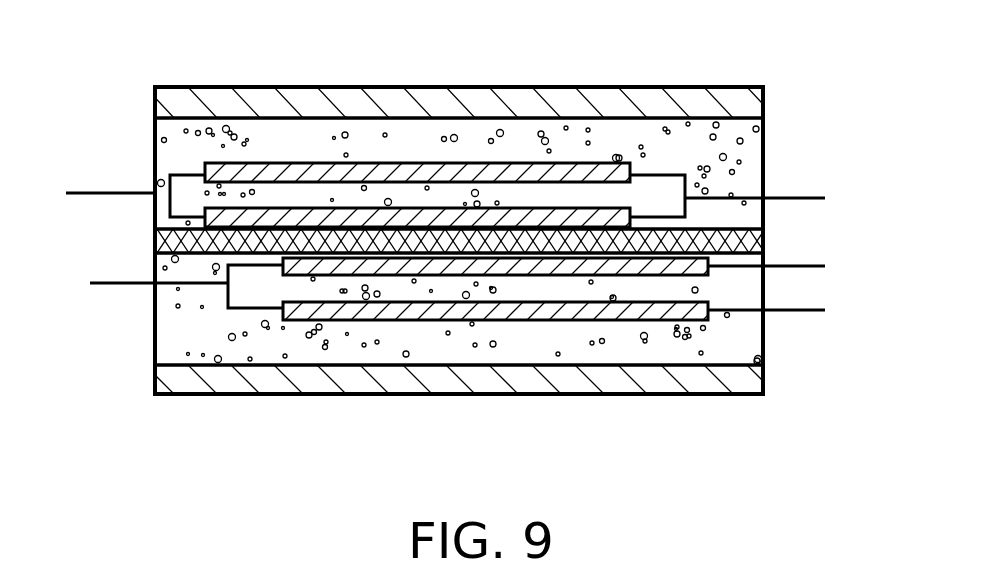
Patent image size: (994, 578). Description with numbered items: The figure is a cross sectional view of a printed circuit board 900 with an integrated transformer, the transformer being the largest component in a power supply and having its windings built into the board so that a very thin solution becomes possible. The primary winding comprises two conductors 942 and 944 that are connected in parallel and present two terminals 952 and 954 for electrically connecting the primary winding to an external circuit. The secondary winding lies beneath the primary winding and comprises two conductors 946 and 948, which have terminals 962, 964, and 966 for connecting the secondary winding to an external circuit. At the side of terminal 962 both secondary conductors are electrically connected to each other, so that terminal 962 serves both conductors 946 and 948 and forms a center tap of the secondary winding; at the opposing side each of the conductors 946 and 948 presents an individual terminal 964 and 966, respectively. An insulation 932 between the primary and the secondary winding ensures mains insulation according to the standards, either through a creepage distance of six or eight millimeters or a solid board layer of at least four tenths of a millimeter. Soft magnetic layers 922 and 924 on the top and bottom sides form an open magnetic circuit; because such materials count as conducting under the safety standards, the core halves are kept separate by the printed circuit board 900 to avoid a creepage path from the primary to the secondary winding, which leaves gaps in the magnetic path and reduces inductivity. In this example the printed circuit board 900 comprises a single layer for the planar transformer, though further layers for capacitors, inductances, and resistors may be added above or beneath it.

The printed circuit board 900 is at (128, 443).
The soft magnetic layer 922 is at (188, 100).
The soft magnetic layer 924 is at (216, 381).
The insulation 932 is at (763, 240).
The conductor 942 is at (312, 161).
The conductor 944 is at (417, 207).
The conductor 946 is at (443, 277).
The conductor 948 is at (338, 322).
The terminal 952 is at (115, 192).
The terminal 954 is at (800, 198).
The terminal 962 is at (110, 292).
The terminal 964 is at (800, 311).
The terminal 966 is at (805, 268).